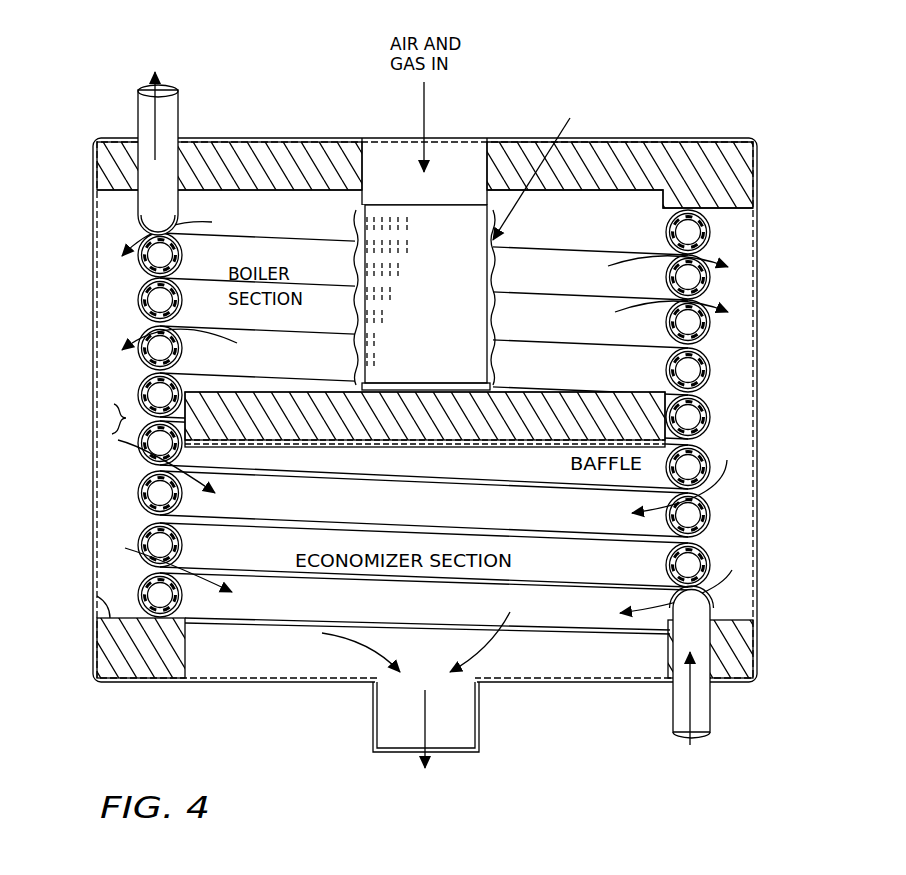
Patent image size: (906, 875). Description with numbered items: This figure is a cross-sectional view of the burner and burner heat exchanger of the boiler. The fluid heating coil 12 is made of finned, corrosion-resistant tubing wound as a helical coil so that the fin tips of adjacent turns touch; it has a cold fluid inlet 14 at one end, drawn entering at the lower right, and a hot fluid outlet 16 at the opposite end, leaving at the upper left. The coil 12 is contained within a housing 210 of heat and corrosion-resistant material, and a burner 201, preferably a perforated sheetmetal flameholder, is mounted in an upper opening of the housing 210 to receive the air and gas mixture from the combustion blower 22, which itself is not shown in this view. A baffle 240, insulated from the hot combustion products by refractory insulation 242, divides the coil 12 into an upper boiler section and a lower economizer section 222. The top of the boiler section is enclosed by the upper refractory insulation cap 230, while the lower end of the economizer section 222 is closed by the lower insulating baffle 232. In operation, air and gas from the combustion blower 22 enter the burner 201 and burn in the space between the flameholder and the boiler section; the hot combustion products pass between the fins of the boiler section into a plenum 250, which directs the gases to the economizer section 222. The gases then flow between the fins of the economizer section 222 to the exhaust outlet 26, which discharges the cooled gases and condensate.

The fluid heating coil 12 is at (713, 371).
The cold fluid inlet 14 is at (713, 718).
The hot fluid outlet 16 is at (178, 123).
The combustion blower 22 is at (713, 288).
The exhaust outlet 26 is at (375, 708).
The burner 201 is at (498, 282).
The housing 210 is at (97, 345).
The economizer section 222 is at (713, 520).
The upper refractory insulation cap 230 is at (113, 202).
The lower insulating baffle 232 is at (97, 592).
The baffle 240 is at (403, 464).
The refractory insulation 242 is at (265, 394).
The plenum 250 is at (116, 412).